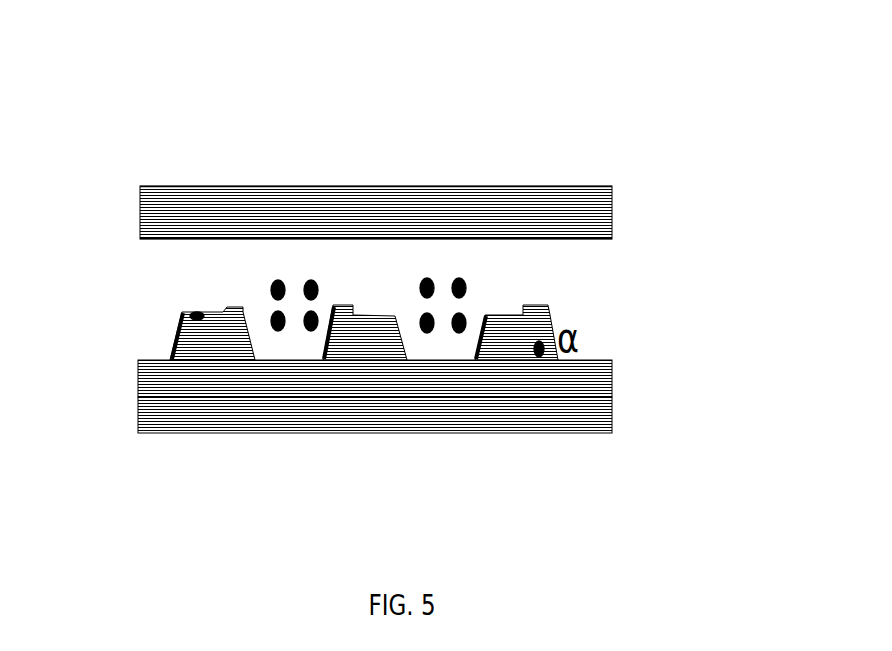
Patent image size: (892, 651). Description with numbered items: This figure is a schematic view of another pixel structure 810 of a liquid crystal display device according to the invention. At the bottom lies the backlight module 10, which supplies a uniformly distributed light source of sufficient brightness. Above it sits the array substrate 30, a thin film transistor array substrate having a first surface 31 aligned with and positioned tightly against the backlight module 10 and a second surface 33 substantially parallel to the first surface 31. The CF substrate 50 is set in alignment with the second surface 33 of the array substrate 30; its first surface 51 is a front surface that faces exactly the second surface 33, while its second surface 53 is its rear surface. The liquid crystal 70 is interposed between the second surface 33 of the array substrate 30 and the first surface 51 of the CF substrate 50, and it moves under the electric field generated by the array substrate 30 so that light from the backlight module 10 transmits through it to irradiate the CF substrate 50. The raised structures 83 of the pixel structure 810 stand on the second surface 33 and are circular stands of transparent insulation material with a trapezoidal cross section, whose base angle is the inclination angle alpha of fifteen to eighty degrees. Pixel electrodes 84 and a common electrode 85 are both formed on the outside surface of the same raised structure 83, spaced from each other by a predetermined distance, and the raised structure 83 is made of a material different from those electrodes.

The pixel structure 810 is at (457, 44).
The backlight module 10 is at (558, 408).
The array substrate 30 is at (558, 382).
The first surface 31 is at (382, 387).
The second surface 33 is at (466, 360).
The CF substrate 50 is at (562, 213).
The first surface 51 is at (147, 240).
The second surface 53 is at (163, 188).
The liquid crystal 70 is at (280, 322).
The raised structures 83 is at (197, 340).
The pixel electrodes 84 is at (197, 317).
The common electrode 85 is at (382, 318).